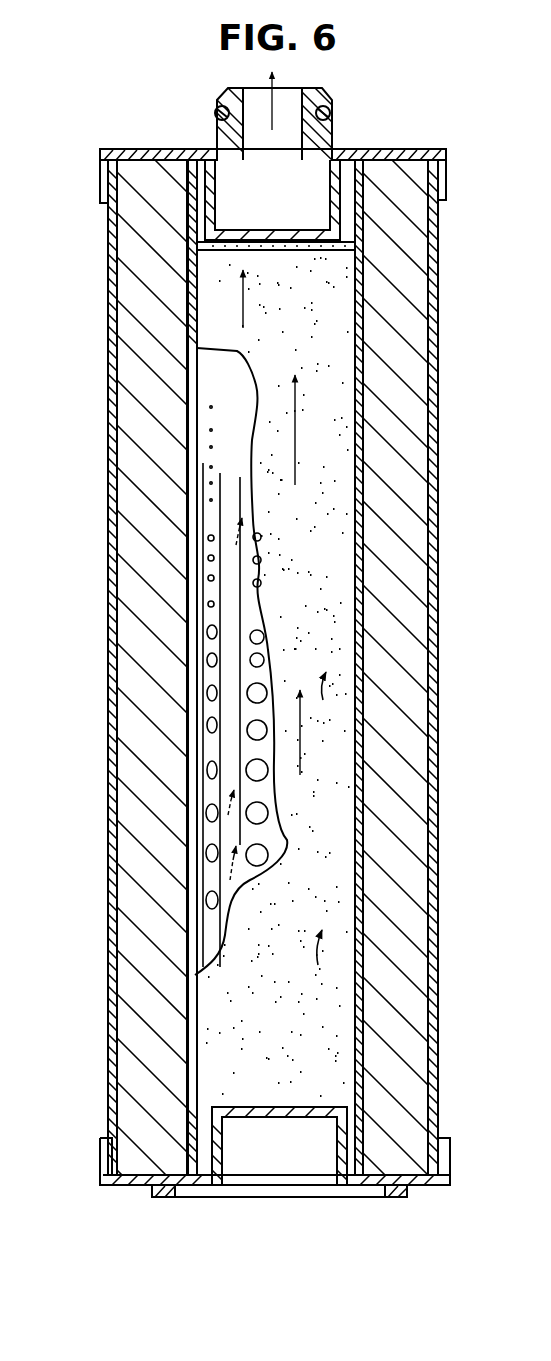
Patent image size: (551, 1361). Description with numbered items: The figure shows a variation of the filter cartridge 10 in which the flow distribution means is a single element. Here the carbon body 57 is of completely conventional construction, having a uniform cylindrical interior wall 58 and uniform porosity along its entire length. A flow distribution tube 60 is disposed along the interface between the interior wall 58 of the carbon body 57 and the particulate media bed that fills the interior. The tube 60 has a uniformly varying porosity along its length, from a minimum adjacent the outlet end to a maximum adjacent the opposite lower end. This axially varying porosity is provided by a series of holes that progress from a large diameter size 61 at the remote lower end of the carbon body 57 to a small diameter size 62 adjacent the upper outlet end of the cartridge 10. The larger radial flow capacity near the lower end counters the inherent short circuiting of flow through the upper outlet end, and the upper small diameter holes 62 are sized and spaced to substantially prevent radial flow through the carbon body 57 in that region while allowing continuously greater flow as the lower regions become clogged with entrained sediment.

The filter cartridge 10 is at (88, 296).
The carbon body 57 is at (138, 432).
The interior wall 58 is at (203, 464).
The flow distribution tube 60 is at (215, 742).
The large diameter holes 61 is at (230, 985).
The small diameter holes 62 is at (210, 602).